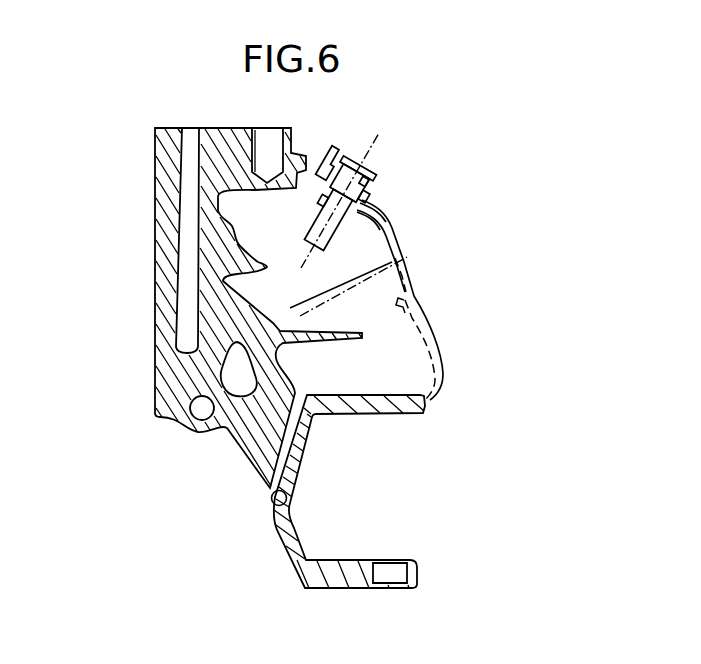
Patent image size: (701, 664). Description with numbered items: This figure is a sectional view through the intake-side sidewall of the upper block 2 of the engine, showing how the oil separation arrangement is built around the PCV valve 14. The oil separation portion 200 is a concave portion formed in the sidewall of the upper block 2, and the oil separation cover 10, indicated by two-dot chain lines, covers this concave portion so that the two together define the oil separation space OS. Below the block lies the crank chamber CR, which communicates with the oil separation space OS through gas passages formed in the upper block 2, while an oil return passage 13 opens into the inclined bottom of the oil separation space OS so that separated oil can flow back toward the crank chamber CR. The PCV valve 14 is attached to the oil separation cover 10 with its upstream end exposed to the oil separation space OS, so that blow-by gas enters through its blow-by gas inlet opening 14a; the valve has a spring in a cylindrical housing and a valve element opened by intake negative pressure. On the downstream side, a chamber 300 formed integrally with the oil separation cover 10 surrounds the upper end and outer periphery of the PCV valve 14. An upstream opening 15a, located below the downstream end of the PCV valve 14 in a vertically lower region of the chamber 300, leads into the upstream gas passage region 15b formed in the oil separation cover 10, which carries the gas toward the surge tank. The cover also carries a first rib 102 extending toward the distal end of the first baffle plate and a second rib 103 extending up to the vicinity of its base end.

The upper block 2 is at (131, 171).
The oil separation portion 200 is at (320, 152).
The PCV valve 14 is at (362, 156).
The chamber 300 is at (375, 172).
The upstream gas passage region 15b is at (368, 202).
The upstream opening 15a is at (372, 210).
The second rib 103 is at (408, 257).
The first rib 102 is at (410, 298).
The oil separation cover 10 is at (436, 394).
The oil return passage 13 is at (286, 501).
The blow-by gas inlet opening 14a is at (337, 224).
The oil separation space OS is at (272, 243).
The crank chamber CR is at (230, 522).